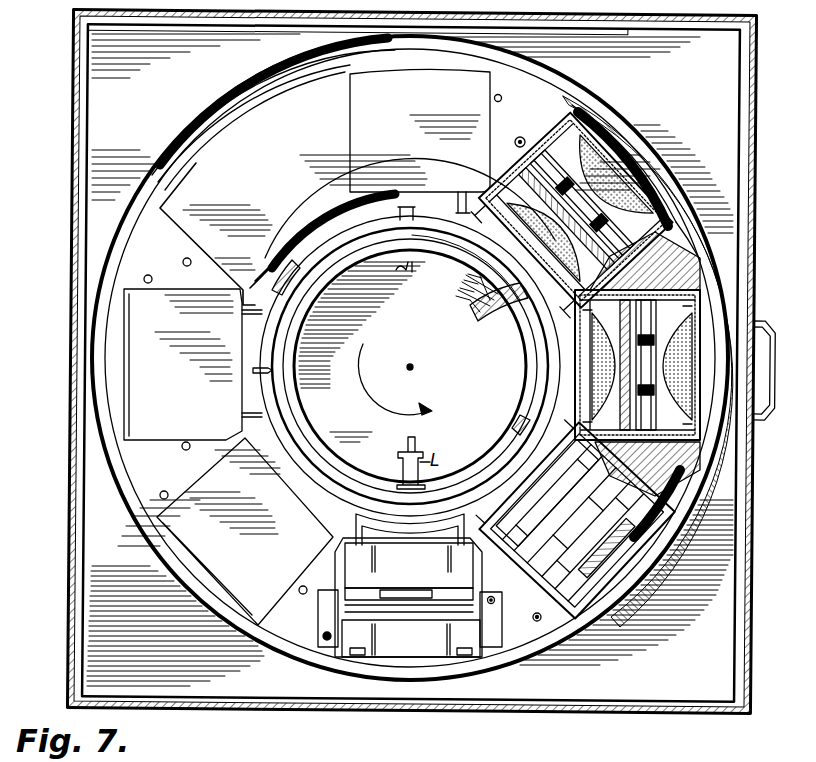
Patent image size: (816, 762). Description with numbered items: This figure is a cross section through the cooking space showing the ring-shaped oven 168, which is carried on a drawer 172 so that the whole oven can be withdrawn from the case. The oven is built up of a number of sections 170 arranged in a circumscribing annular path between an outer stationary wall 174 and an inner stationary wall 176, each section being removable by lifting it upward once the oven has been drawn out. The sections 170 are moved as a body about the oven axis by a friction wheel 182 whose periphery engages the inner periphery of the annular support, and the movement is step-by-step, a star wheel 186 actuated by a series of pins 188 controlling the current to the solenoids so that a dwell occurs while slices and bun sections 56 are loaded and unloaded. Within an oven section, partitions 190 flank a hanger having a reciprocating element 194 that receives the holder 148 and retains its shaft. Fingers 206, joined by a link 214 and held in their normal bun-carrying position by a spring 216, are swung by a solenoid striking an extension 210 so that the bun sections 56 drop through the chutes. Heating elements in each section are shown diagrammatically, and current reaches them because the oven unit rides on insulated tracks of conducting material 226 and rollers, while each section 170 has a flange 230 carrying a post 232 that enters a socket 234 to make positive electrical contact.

The bun sections 56 is at (560, 398).
The holder 148 is at (530, 628).
The ring-shaped oven 168 is at (742, 452).
The sections 170 is at (722, 276).
The drawer 172 is at (732, 606).
The outer stationary wall 174 is at (640, 138).
The inner stationary wall 176 is at (530, 340).
The friction wheel 182 is at (547, 378).
The star wheel 186 is at (468, 304).
The pins 188 is at (386, 206).
The partitions 190 is at (698, 228).
The reciprocating element 194 is at (390, 486).
The fingers 206 is at (518, 512).
The extension 210 is at (416, 548).
The link 214 is at (500, 102).
The spring 216 is at (487, 186).
The tracks of conducting material 226 is at (250, 108).
The flange 230 is at (322, 614).
The post 232 is at (323, 636).
The socket 234 is at (183, 262).